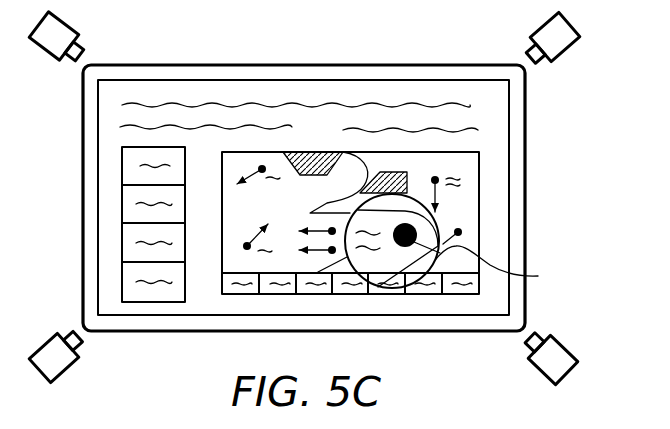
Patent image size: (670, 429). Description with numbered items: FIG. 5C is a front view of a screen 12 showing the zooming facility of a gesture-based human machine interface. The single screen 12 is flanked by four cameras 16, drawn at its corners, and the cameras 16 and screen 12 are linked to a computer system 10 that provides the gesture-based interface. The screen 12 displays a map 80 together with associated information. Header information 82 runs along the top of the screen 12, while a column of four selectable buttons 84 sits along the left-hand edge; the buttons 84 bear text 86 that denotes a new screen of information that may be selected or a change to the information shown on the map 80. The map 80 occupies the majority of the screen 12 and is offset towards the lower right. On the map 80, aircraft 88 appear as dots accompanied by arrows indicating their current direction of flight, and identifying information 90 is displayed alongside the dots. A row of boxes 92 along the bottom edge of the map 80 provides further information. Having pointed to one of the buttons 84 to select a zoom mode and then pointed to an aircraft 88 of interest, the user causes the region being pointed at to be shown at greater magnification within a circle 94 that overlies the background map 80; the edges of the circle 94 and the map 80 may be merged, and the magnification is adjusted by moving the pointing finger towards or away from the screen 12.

The computer system 10 is at (552, 113).
The screen 12 is at (98, 252).
The cameras 16 is at (66, 372).
The map 80 is at (473, 165).
The header information 82 is at (118, 108).
The selectable buttons 84 is at (128, 159).
The text 86 is at (135, 204).
The aircraft 88 is at (247, 240).
The aircraft identification information 90 is at (277, 249).
The row of boxes 92 is at (229, 297).
The circle 94 is at (500, 265).